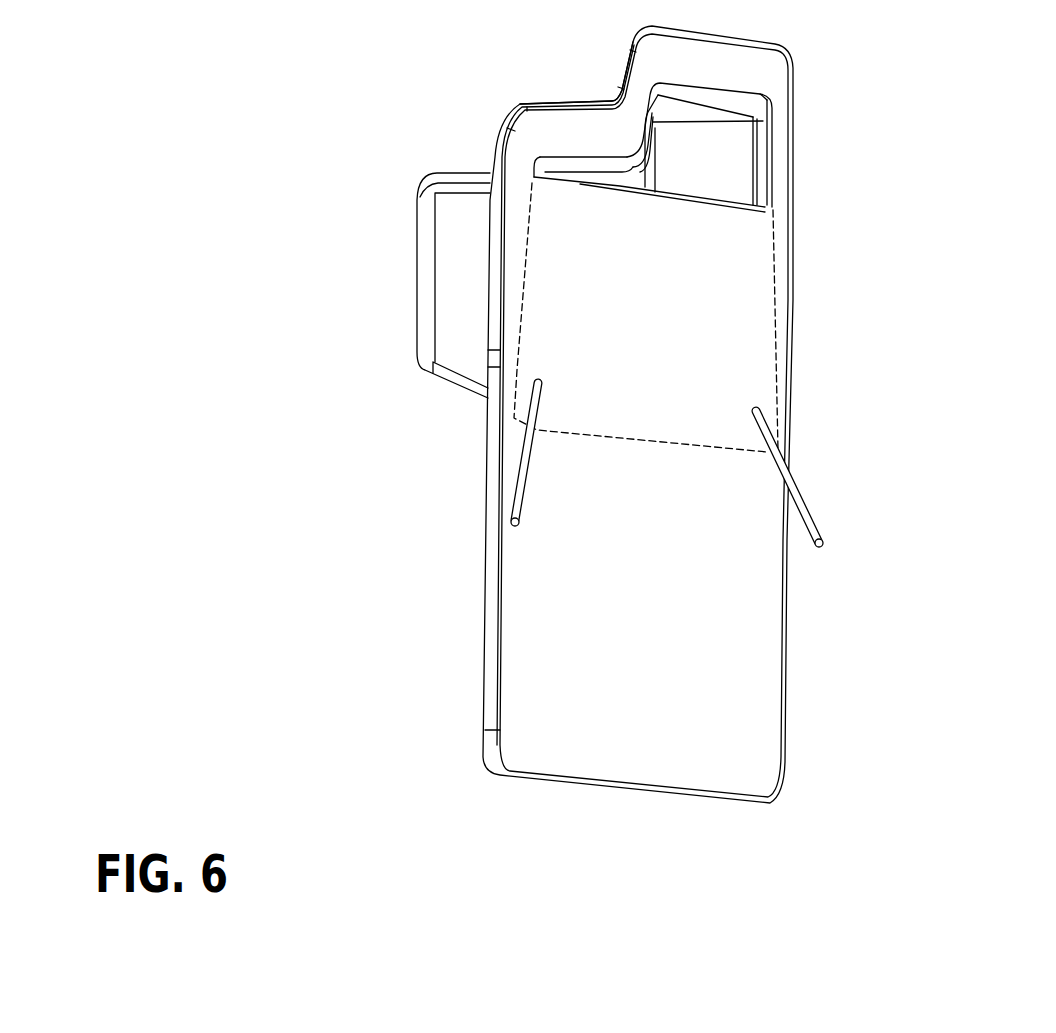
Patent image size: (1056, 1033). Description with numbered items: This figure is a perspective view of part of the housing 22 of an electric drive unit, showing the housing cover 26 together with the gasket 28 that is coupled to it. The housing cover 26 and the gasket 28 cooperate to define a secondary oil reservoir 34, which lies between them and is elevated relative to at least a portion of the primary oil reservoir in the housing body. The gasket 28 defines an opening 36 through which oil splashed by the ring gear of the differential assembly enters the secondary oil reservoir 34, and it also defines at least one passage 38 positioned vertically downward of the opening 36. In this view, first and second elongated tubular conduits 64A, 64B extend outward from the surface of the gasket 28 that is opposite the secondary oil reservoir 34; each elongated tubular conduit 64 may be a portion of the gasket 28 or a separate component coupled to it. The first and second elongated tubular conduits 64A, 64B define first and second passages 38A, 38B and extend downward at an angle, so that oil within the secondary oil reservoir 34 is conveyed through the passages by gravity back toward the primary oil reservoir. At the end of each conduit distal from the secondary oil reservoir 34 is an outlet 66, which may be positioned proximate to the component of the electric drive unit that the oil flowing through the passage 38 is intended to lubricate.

The housing 22 is at (635, 403).
The housing cover 26 is at (557, 83).
The gasket 28 is at (709, 295).
The secondary oil reservoir 34 is at (786, 320).
The opening 36 is at (707, 162).
The passage 38 is at (635, 574).
The first passage 38A is at (512, 525).
The second passage 38B is at (823, 548).
The elongated tubular conduit 64 is at (666, 462).
The first elongated tubular conduit 64A is at (525, 478).
The second elongated tubular conduit 64B is at (805, 507).
The outlet 66 is at (635, 574).